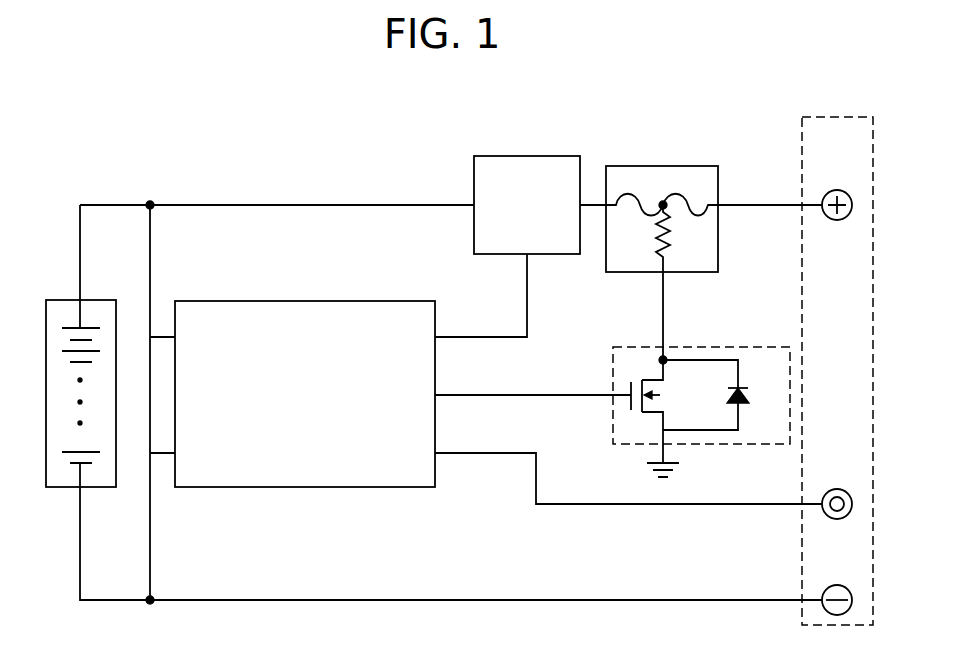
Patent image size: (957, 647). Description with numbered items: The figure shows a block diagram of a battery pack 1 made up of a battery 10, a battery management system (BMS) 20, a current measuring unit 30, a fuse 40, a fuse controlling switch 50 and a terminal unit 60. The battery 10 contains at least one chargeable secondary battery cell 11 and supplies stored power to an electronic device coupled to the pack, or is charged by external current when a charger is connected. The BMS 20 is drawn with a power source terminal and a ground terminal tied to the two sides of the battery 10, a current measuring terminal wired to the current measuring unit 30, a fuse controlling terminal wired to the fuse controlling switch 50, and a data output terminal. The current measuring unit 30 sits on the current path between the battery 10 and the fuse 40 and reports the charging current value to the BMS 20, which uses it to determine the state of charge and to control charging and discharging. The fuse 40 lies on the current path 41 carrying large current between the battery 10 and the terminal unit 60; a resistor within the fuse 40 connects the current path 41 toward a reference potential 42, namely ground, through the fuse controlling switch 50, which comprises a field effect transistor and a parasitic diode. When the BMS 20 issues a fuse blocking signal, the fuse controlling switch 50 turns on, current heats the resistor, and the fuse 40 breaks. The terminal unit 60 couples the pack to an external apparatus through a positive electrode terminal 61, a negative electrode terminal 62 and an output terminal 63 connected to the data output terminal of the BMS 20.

The battery pack 1 is at (684, 88).
The battery 10 is at (97, 300).
The battery cell 11 is at (66, 327).
The battery management system (BMS) 20 is at (400, 301).
The current measuring unit 30 is at (527, 156).
The fuse 40 is at (663, 166).
The current path 41 is at (757, 205).
The reference potential 42 is at (682, 472).
The fuse controlling switch 50 is at (755, 347).
The terminal unit 60 is at (838, 117).
The positive electrode terminal 61 is at (835, 190).
The negative electrode terminal 62 is at (835, 585).
The output terminal 63 is at (835, 489).